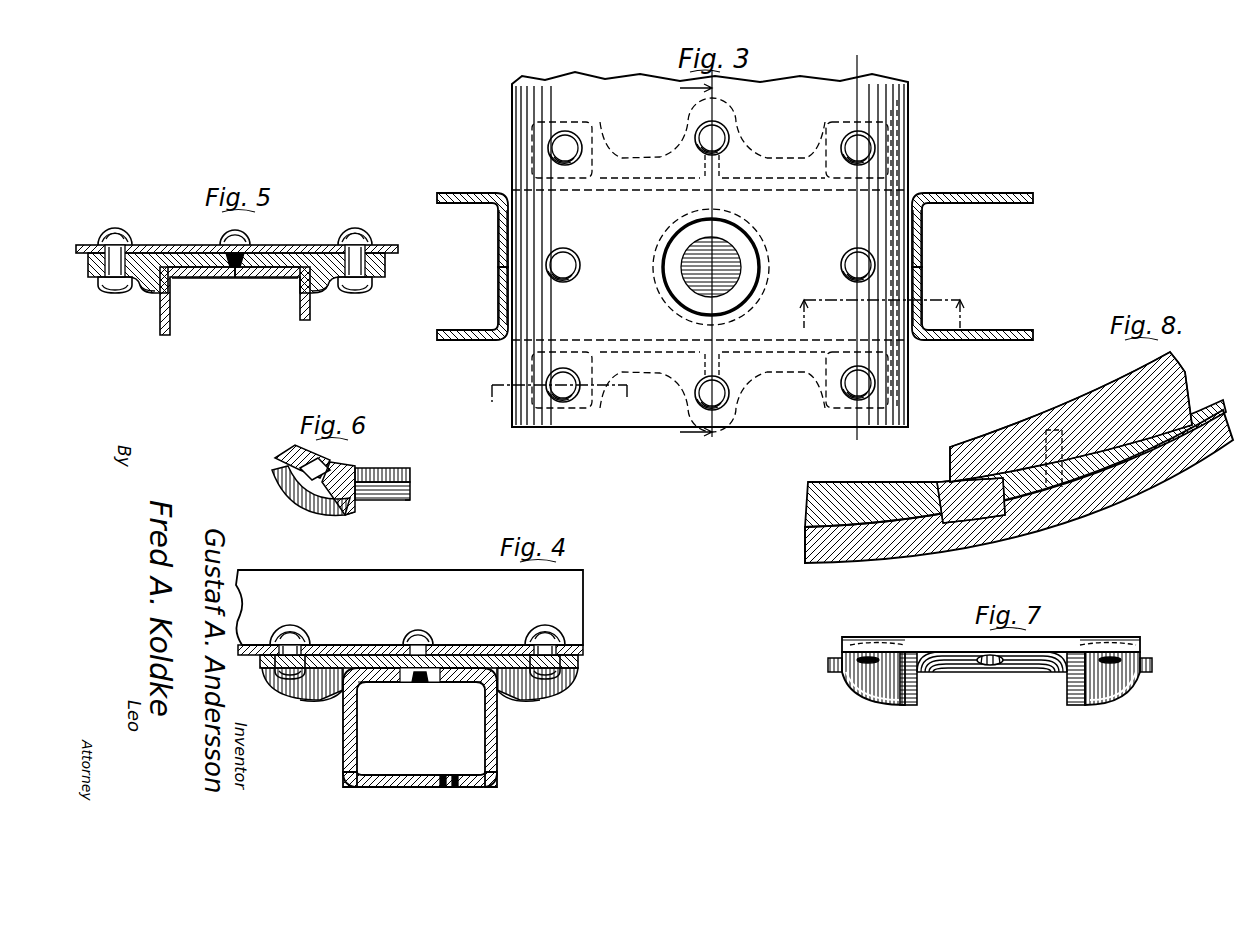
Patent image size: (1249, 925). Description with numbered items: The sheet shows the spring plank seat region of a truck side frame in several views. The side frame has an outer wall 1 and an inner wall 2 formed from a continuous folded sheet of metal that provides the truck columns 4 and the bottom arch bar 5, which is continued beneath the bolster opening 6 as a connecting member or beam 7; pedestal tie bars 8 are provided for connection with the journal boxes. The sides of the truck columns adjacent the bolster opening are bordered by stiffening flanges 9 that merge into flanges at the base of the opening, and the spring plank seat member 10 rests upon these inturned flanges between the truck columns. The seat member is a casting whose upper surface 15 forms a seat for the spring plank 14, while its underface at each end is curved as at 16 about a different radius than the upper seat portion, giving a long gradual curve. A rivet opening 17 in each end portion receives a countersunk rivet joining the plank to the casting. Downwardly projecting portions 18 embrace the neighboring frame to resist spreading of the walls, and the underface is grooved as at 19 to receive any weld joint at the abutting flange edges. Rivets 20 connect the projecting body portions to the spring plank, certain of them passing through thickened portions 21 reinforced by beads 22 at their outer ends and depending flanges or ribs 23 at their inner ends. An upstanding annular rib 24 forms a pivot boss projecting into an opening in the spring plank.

In FIG. 3, the outer wall 1 is at (458, 340).
In FIG. 5, the outer wall 1 is at (312, 318).
In FIG. 4, the outer wall 1 is at (500, 751).
In FIG. 3, the inner wall 2 is at (472, 193).
In FIG. 5, the inner wall 2 is at (160, 325).
In FIG. 4, the inner wall 2 is at (343, 743).
In FIG. 3, the truck columns 4 is at (697, 260).
In FIG. 3, the bottom arch bar 5 is at (853, 253).
In FIG. 3, the bolster opening 6 is at (557, 388).
In FIG. 4, the connecting member or beam 7 is at (450, 787).
In FIG. 3, the pedestal tie bars 8 is at (883, 309).
In FIG. 3, the stiffening flanges 9 is at (497, 256).
In FIG. 5, the stiffening flanges 9 is at (207, 280).
In FIG. 4, the stiffening flanges 9 is at (416, 688).
In FIG. 8, the stiffening flanges 9 is at (806, 548).
In FIG. 5, the spring plank seat member 10 is at (296, 251).
In FIG. 6, the spring plank seat member 10 is at (360, 468).
In FIG. 4, the spring plank seat member 10 is at (353, 648).
In FIG. 8, the spring plank seat member 10 is at (808, 502).
In FIG. 7, the spring plank seat member 10 is at (915, 650).
In FIG. 3, the spring plank 14 is at (660, 422).
In FIG. 5, the spring plank 14 is at (181, 245).
In FIG. 4, the spring plank 14 is at (585, 626).
In FIG. 8, the upper surface 15 is at (1168, 392).
In FIG. 8, the curved portion 16 is at (938, 488).
In FIG. 7, the curved portion 16 is at (960, 670).
In FIG. 5, the rivet opening 17 is at (258, 251).
In FIG. 8, the rivet opening 17 is at (1054, 430).
In FIG. 7, the rivet opening 17 is at (990, 668).
In FIG. 3, the downwardly projecting portions 18 is at (797, 190).
In FIG. 5, the downwardly projecting portions 18 is at (147, 292).
In FIG. 6, the downwardly projecting portions 18 is at (318, 515).
In FIG. 4, the downwardly projecting portions 18 is at (335, 702).
In FIG. 7, the downwardly projecting portions 18 is at (916, 708).
In FIG. 4, the groove 19 is at (431, 640).
In FIG. 3, the rivets 20 is at (846, 148).
In FIG. 5, the rivets 20 is at (115, 233).
In FIG. 4, the rivets 20 is at (292, 628).
In FIG. 3, the thickened portions 21 is at (842, 122).
In FIG. 5, the thickened portions 21 is at (96, 277).
In FIG. 6, the thickened portions 21 is at (292, 492).
In FIG. 7, the thickened portions 21 is at (850, 641).
In FIG. 3, the beads 22 is at (910, 130).
In FIG. 6, the beads 22 is at (280, 468).
In FIG. 7, the beads 22 is at (880, 652).
In FIG. 3, the depending flanges or ribs 23 is at (590, 126).
In FIG. 6, the depending flanges or ribs 23 is at (350, 513).
In FIG. 4, the depending flanges or ribs 23 is at (300, 696).
In FIG. 7, the depending flanges or ribs 23 is at (870, 702).
In FIG. 3, the upstanding annular rib 24 is at (672, 262).
In FIG. 4, the upstanding annular rib 24 is at (462, 655).